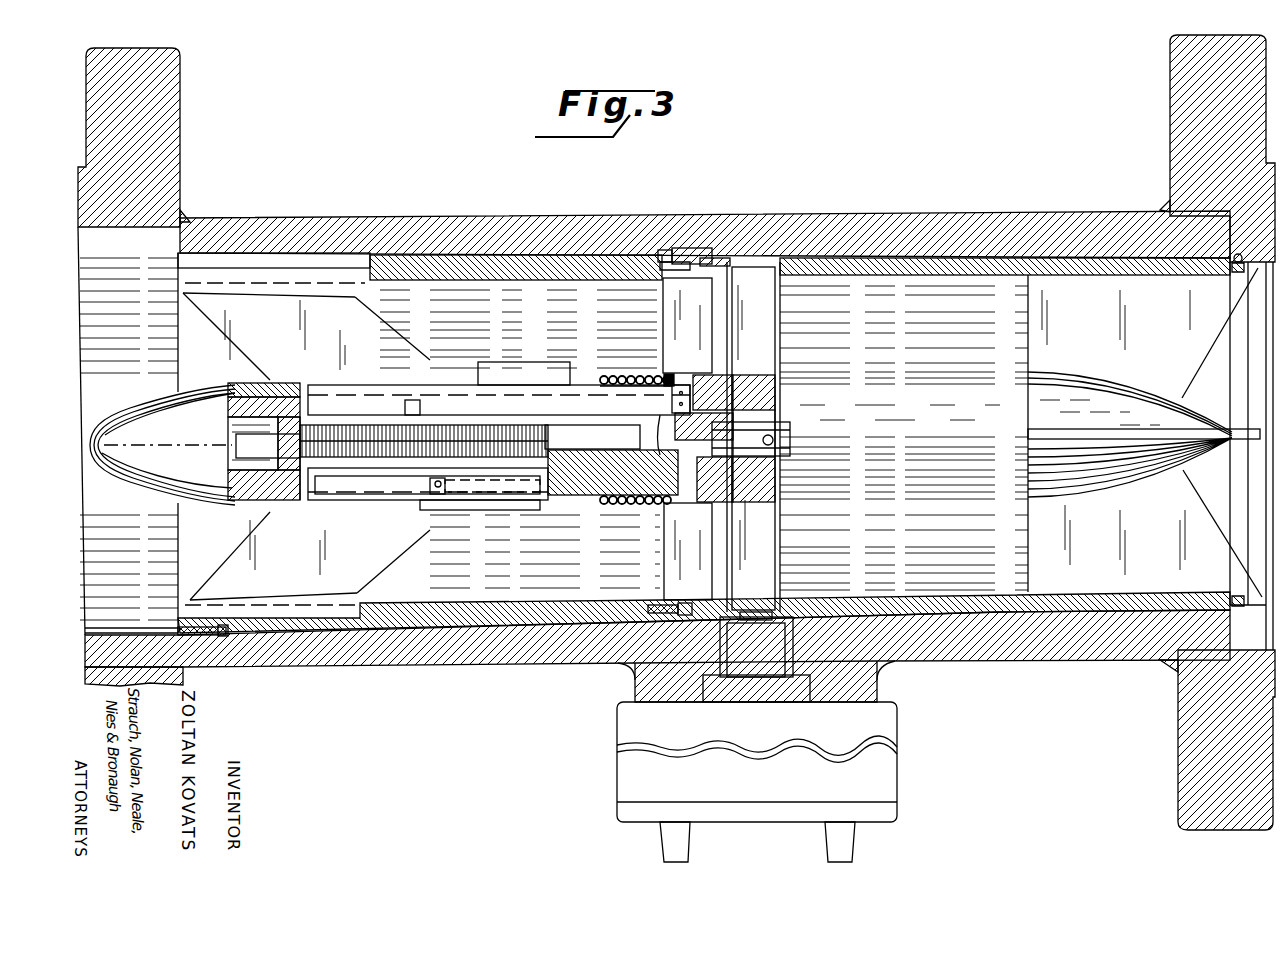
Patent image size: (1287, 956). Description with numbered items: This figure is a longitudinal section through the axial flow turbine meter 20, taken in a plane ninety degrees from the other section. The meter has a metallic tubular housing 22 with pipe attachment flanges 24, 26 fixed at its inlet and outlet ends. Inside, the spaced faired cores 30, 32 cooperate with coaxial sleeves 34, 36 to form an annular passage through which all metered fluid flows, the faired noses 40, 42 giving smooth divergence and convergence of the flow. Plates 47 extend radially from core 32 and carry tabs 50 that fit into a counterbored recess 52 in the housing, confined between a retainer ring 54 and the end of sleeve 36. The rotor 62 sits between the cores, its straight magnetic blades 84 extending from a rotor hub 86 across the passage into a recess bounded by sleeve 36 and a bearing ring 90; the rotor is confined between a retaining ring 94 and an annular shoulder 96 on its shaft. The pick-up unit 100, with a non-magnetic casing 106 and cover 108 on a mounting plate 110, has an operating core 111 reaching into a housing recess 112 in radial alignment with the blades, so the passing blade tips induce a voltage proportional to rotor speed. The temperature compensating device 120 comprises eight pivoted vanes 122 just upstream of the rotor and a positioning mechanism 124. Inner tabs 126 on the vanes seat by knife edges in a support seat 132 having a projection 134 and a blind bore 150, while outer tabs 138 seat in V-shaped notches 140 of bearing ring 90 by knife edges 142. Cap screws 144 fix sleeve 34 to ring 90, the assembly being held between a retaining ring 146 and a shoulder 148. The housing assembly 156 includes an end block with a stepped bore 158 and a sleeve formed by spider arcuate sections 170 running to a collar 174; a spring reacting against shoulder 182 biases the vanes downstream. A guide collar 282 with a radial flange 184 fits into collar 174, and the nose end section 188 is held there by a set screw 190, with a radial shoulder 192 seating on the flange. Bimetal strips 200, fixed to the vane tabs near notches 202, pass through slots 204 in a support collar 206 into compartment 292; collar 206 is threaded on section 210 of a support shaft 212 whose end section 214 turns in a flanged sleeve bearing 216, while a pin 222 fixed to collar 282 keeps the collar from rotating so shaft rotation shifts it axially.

The axial flow turbine meter 20 is at (676, 432).
The housing 22 is at (975, 208).
The pipe attachment flange 24 is at (180, 70).
The pipe attachment flange 26 is at (1170, 52).
The faired core 30 is at (120, 397).
The faired core 32 is at (1115, 498).
The sleeve 34 is at (385, 283).
The sleeve 36 is at (880, 276).
The faired nose 40 is at (105, 476).
The faired nose 42 is at (1212, 454).
The plates 47 is at (1213, 390).
The tabs 50 is at (1240, 274).
The counterbored recess 52 is at (1240, 250).
The retainer ring 54 is at (1252, 590).
The rotor 62 is at (782, 536).
The rotor blades 84 is at (766, 324).
The rotor hub 86 is at (770, 377).
The bearing ring 90 is at (722, 262).
The retaining ring 94 is at (770, 466).
The annular shoulder 96 is at (780, 440).
The pick-up unit 100 is at (750, 782).
The casing 106 is at (895, 764).
The cover 108 is at (895, 810).
The mounting plate 110 is at (877, 684).
The operating core 111 is at (756, 604).
The housing recess 112 is at (790, 620).
The temperature compensating device 120 is at (345, 423).
The fluid flow deflecting vanes 122 is at (708, 336).
The temperature responsive positioning mechanism 124 is at (500, 412).
The tabs 126 is at (655, 381).
The knife edge support seat 132 is at (714, 503).
The coaxial projection 134 is at (690, 502).
The tabs 138 is at (666, 250).
The V-shaped notches 140 is at (665, 271).
The knife edges 142 is at (602, 378).
The cap screws 144 is at (655, 605).
The retaining ring 146 is at (178, 628).
The annular shoulder 148 is at (695, 256).
The blind bore 150 is at (740, 472).
The housing assembly 156 is at (505, 512).
The stepped bore 158 is at (663, 432).
The arcuate section 170 is at (480, 382).
The collar 174 is at (250, 383).
The annular shoulder 182 is at (605, 506).
The radial flange 184 is at (238, 385).
The end section 188 is at (290, 484).
The set screw 190 is at (238, 474).
The radial shoulder 192 is at (228, 397).
The bimetal strips 200 is at (556, 412).
The notches 202 is at (678, 384).
The slots 204 is at (490, 412).
The support collar 206 is at (415, 499).
The threaded section 210 is at (430, 458).
The support shaft 212 is at (345, 422).
The end section 214 is at (575, 440).
The flanged sleeve bearing 216 is at (548, 458).
The cylindrical pin 222 is at (302, 504).
The guide collar 282 is at (248, 487).
The compartment 292 is at (459, 488).